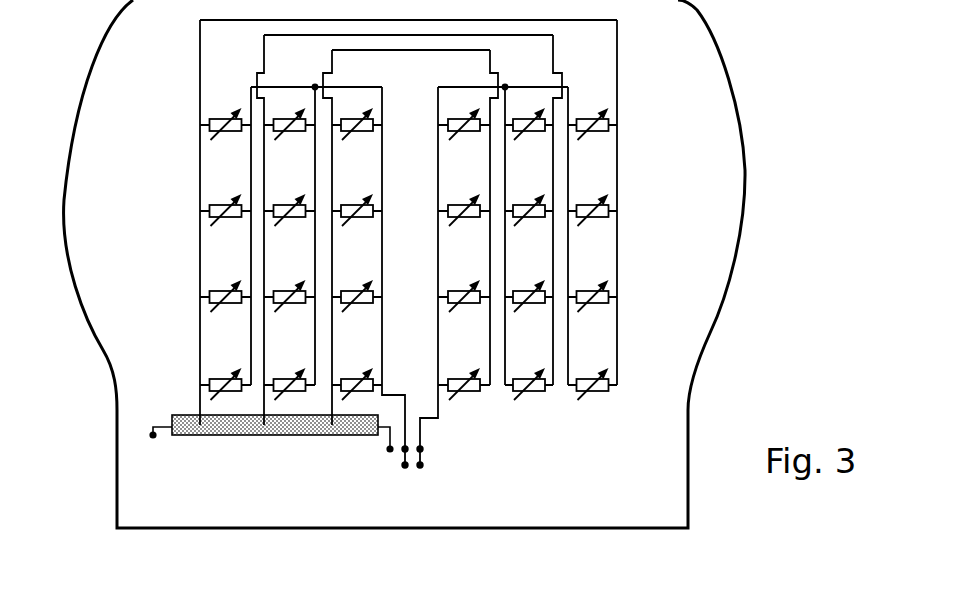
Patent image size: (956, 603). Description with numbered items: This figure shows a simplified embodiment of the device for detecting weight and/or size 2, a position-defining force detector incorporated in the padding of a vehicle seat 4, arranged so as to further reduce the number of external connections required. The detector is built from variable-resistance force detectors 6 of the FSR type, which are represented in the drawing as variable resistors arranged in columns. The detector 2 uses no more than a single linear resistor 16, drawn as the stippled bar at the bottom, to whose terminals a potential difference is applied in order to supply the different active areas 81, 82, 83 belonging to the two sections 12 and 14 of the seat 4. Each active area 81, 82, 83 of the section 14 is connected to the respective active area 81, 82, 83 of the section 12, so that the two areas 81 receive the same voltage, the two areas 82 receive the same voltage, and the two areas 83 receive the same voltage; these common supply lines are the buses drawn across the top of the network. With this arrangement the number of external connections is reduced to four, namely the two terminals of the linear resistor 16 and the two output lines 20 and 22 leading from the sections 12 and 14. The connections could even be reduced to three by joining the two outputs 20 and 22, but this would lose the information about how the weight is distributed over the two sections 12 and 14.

The device for detecting weight and/or size 2 is at (170, 174).
The seat 4 is at (688, 189).
The variable-resistance force detector 6 is at (212, 290).
The active area 81 is at (350, 405).
The active area 82 is at (292, 405).
The active area 83 is at (387, 258).
The section of the seat 12 is at (246, 511).
The section of the seat 14 is at (547, 496).
The linear resistor 16 is at (178, 438).
The output line 20 is at (405, 465).
The output line 22 is at (420, 465).